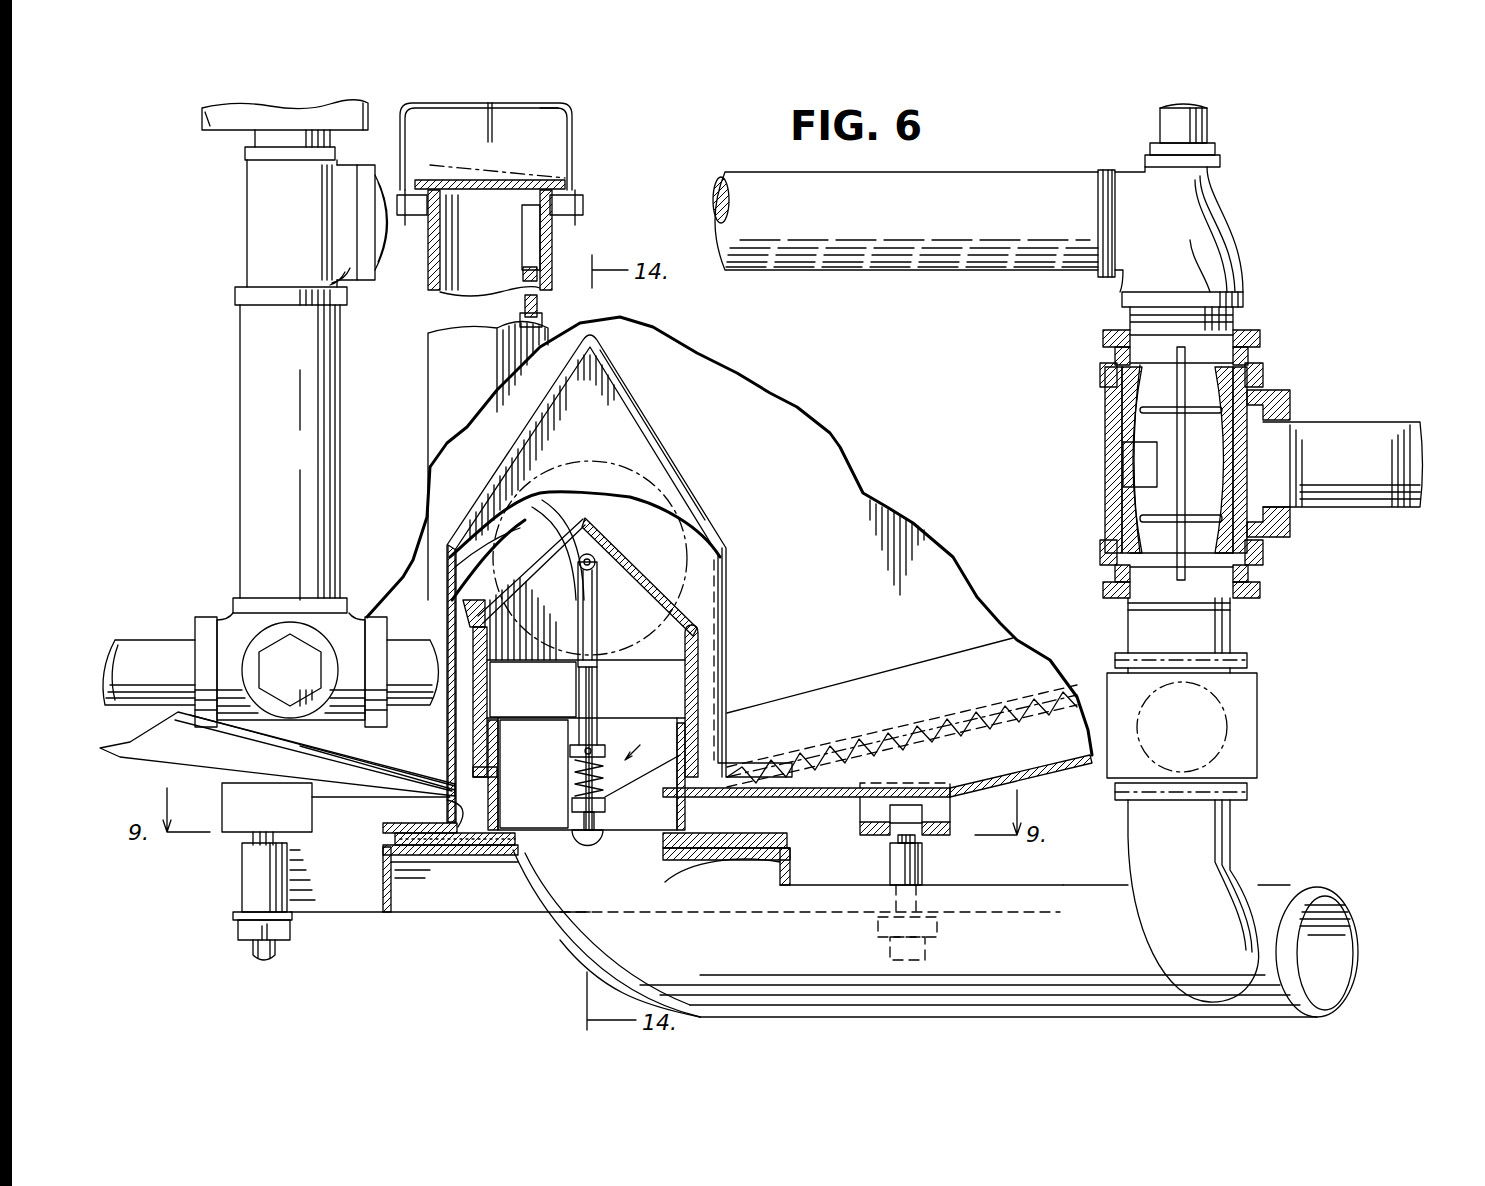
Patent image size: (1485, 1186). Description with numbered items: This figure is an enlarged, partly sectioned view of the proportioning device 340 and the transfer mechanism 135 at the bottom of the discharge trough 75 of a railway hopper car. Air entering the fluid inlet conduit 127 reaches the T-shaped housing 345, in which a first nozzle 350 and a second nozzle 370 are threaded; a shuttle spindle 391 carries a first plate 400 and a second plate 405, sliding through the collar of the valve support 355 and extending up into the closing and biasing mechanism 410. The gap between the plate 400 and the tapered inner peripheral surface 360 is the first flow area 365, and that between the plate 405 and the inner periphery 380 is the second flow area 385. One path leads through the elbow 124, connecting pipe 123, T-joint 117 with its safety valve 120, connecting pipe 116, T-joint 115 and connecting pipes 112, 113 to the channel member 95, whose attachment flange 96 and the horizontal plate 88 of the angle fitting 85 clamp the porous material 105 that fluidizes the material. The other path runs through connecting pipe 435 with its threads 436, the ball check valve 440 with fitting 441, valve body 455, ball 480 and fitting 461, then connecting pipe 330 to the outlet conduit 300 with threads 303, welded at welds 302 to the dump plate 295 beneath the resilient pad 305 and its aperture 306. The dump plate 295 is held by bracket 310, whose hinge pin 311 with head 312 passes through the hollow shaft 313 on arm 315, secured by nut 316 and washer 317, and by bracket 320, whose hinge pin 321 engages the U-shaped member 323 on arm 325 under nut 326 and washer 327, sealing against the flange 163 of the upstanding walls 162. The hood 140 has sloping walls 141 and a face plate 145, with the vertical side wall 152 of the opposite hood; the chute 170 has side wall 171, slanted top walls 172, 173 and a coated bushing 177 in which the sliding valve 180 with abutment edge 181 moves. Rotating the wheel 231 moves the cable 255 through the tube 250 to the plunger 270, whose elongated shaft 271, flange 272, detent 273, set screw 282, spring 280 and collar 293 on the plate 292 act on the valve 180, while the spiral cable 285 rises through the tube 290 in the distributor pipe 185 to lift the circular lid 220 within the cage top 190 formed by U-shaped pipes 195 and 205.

The safety valve 120 is at (230, 118).
The T-joint 117 is at (250, 242).
The connecting pipe 116 is at (245, 462).
The T-joint 115 is at (235, 628).
The connecting pipe 112 is at (130, 655).
The connecting pipe 113 is at (405, 645).
The attachment flange 96 is at (262, 735).
The horizontal plate 88 is at (377, 754).
The bracket 320 is at (230, 835).
The hinge pin 321 is at (262, 840).
The U-shaped member 323 is at (258, 893).
The washer 327 is at (237, 918).
The nut 326 is at (292, 930).
The arm 325 is at (360, 898).
The dump plate 295 is at (458, 912).
The upstanding walls 162 is at (455, 857).
The resilient pad 305 is at (395, 840).
The welds 302 is at (508, 857).
The aperture 306 is at (528, 858).
The flange 163 is at (383, 826).
The sloping walls 141 is at (633, 392).
The face plate 145 is at (600, 415).
The transfer mechanism 135 is at (730, 432).
The hood 140 is at (727, 498).
The vertical side wall 152 is at (722, 612).
The wheel 231 is at (680, 475).
The distributor pipe 185 is at (440, 362).
The spiral cable 285 is at (522, 302).
The cage top 190 is at (597, 138).
The U-shaped pipe 205 is at (478, 133).
The U-shaped pipe 195 is at (553, 121).
The circular lid 220 is at (490, 164).
The tube 290 is at (520, 238).
The chute 170 is at (723, 584).
The slanted top wall 172 is at (570, 525).
The slanted top wall 173 is at (640, 578).
The tube 250 is at (600, 660).
The discharge trough 75 is at (565, 660).
The side wall 171 is at (700, 658).
The bushing 177 is at (700, 690).
The plate 292 is at (668, 805).
The plunger 270 is at (641, 739).
The cable 255 is at (596, 703).
The flange 272 is at (577, 740).
The set screw 282 is at (570, 748).
The spring 280 is at (578, 770).
The collar 293 is at (572, 803).
The elongated shaft 271 is at (580, 820).
The detent 273 is at (588, 848).
The abutment edge 181 is at (715, 848).
The sliding valve 180 is at (668, 860).
The bracket 310 is at (940, 818).
The head 312 is at (890, 815).
The hinge pin 311 is at (918, 840).
The hollow shaft 313 is at (925, 870).
The washer 317 is at (935, 922).
The nut 316 is at (938, 940).
The arm 315 is at (848, 880).
The angle fitting 85 is at (945, 720).
The porous material 105 is at (935, 735).
The channel member 95 is at (1050, 765).
The outlet conduit 300 is at (1068, 900).
The threads 303 is at (1325, 888).
The connecting pipe 330 is at (1245, 850).
The connecting pipe 435 is at (1135, 630).
The threads 436 is at (1232, 608).
The ball check valve 440 is at (1288, 668).
The fitting 441 is at (1245, 655).
The valve body 455 is at (1250, 722).
The ball 480 is at (1235, 758).
The fitting 461 is at (1250, 792).
The connecting pipe 123 is at (1010, 185).
The closing and biasing mechanism 410 is at (1219, 124).
The elbow 124 is at (1225, 268).
The proportioning device 340 is at (1310, 298).
The first nozzle 350 is at (1278, 338).
The valve support 355 is at (1125, 372).
The tapered inner peripheral surface 360 is at (1120, 435).
The first flow area 365 is at (1128, 400).
The second flow area 385 is at (1135, 518).
The inner periphery 380 is at (1100, 548).
The second nozzle 370 is at (1262, 590).
The first plate 400 is at (1203, 413).
The second plate 405 is at (1197, 522).
The spindle 391 is at (1186, 470).
The T-shaped housing 345 is at (1282, 398).
The fluid inlet conduit 127 is at (1348, 425).